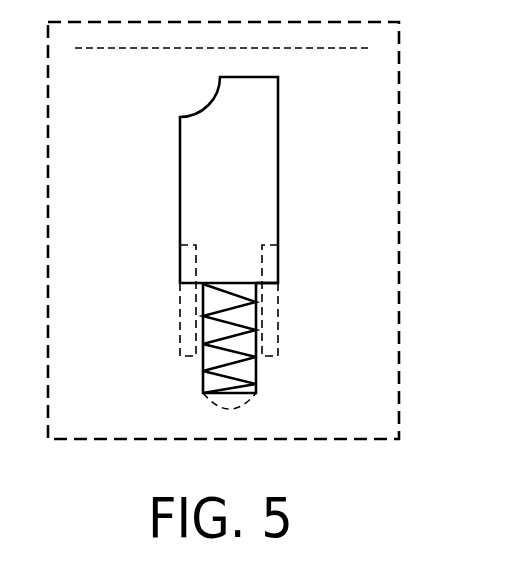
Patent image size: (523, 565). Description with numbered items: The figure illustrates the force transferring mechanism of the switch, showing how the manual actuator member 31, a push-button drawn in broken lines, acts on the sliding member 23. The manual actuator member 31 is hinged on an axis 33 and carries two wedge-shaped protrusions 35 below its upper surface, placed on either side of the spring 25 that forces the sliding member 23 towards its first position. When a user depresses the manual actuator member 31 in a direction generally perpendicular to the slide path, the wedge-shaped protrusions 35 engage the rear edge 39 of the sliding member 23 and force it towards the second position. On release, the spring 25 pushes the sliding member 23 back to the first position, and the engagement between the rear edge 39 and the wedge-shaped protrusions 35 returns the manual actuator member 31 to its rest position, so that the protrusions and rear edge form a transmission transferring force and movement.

The sliding member 23 is at (278, 153).
The spring 25 is at (247, 376).
The manual actuator member 31 is at (399, 168).
The axis 33 is at (352, 48).
The wedge-shaped protrusions 35 is at (180, 328).
The rear edge 39 is at (262, 283).